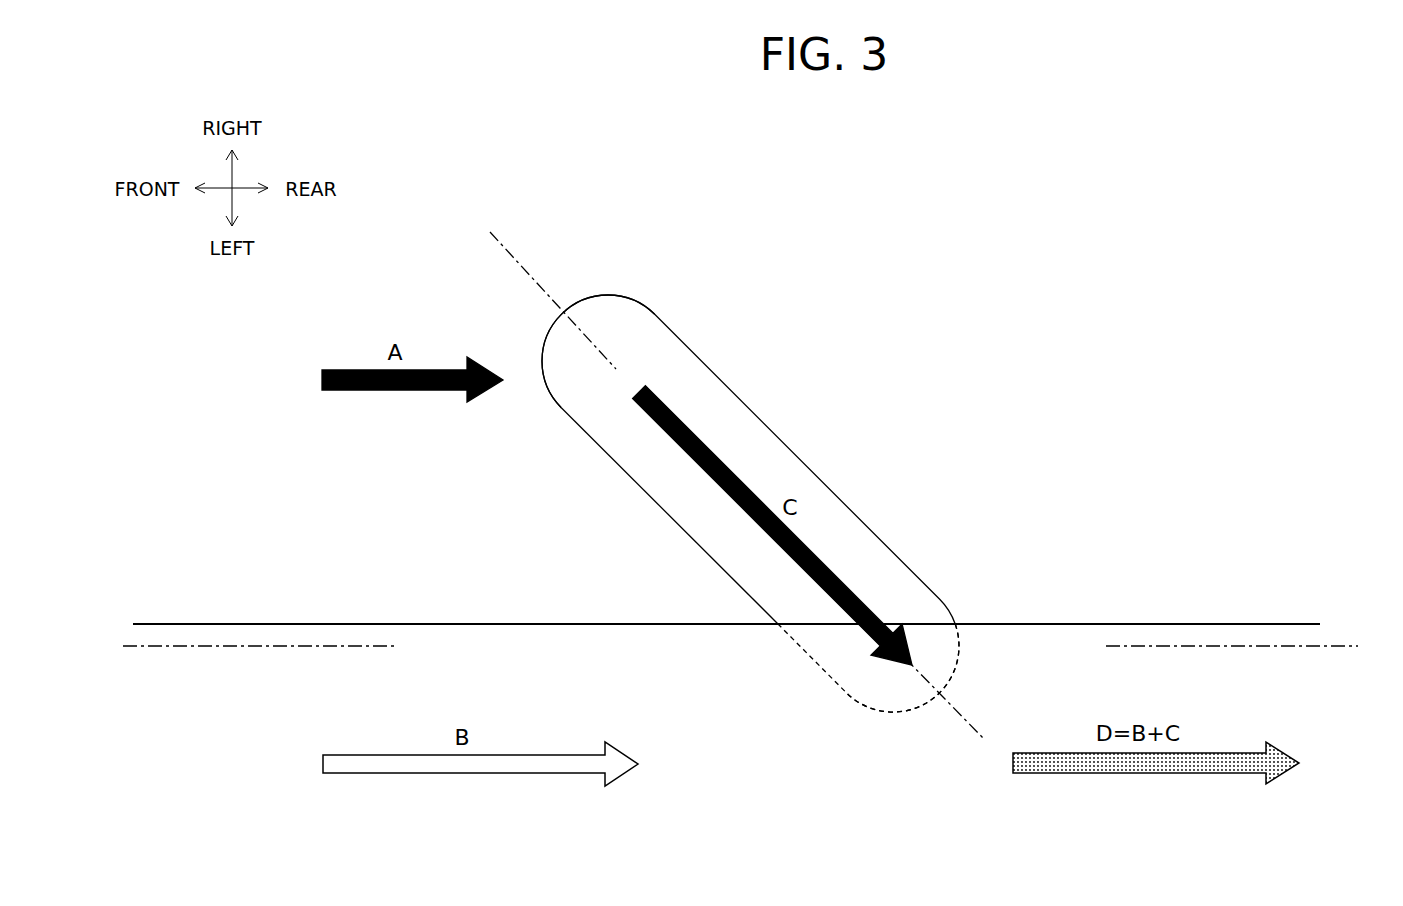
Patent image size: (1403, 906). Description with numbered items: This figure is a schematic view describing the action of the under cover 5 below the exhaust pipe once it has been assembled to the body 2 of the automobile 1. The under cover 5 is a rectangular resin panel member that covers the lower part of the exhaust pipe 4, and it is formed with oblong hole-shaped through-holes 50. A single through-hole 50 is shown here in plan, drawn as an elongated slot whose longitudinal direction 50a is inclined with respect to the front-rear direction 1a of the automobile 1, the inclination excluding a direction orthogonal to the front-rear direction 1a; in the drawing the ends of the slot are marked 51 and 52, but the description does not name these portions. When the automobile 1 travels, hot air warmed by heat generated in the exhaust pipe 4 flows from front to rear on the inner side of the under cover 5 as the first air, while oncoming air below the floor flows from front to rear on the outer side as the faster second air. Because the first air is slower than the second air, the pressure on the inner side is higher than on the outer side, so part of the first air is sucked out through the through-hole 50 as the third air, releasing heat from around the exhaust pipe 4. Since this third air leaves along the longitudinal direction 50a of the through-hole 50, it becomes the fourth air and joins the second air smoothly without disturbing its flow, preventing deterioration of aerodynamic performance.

The automobile 1 is at (966, 150).
The front-rear direction 1a is at (760, 648).
The body 2 is at (912, 210).
The exhaust pipe 4 is at (1193, 624).
The under cover below the exhaust pipe 5 is at (1171, 430).
The through-hole 50 is at (698, 363).
The longitudinal direction of the through-hole 50a is at (718, 473).
The leading end portion 51 is at (563, 316).
The trailing end portion 52 is at (932, 690).